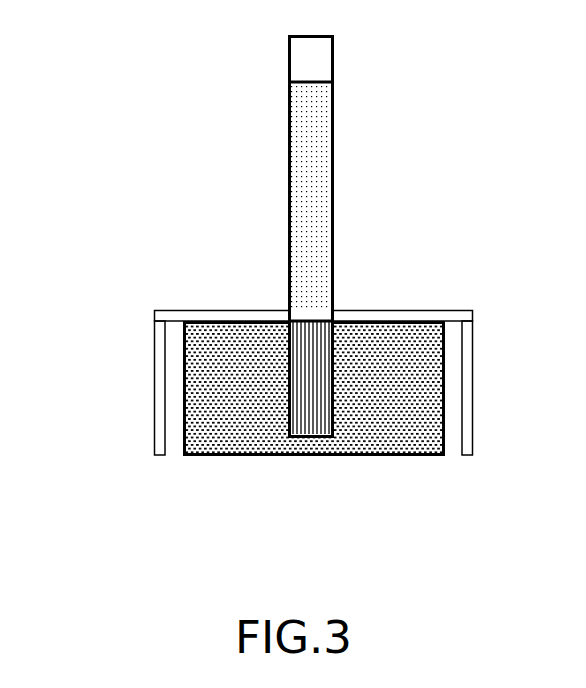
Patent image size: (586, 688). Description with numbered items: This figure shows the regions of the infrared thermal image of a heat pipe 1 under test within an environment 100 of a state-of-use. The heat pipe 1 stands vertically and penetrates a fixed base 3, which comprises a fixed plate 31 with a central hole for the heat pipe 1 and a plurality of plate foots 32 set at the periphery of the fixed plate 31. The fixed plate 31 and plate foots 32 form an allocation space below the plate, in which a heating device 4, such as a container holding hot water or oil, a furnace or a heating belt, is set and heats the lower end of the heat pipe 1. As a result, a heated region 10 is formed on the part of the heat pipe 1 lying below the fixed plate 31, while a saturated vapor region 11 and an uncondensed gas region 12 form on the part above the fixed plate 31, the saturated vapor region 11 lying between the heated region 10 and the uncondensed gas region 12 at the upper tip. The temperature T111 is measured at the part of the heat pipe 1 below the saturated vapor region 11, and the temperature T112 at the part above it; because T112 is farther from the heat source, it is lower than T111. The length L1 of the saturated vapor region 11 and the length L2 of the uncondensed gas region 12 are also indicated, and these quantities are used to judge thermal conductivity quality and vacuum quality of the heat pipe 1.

The environment of a state-of-use 100 is at (122, 64).
The heat pipe 1 is at (371, 277).
The saturated vapor region 11 is at (310, 197).
The uncondensed gas region 12 is at (308, 60).
The temperature at lower end of saturated vapor region T111 is at (312, 293).
The temperature at upper end of saturated vapor region T112 is at (308, 103).
The heated region 10 is at (315, 402).
The fixed base 3 is at (290, 327).
The fixed plate 31 is at (183, 308).
The plate foots 32 is at (153, 387).
The heating device 4 is at (428, 377).
The length of the saturated vapor region L1 is at (271, 85).
The length of the uncondensed gas region L2 is at (271, 38).